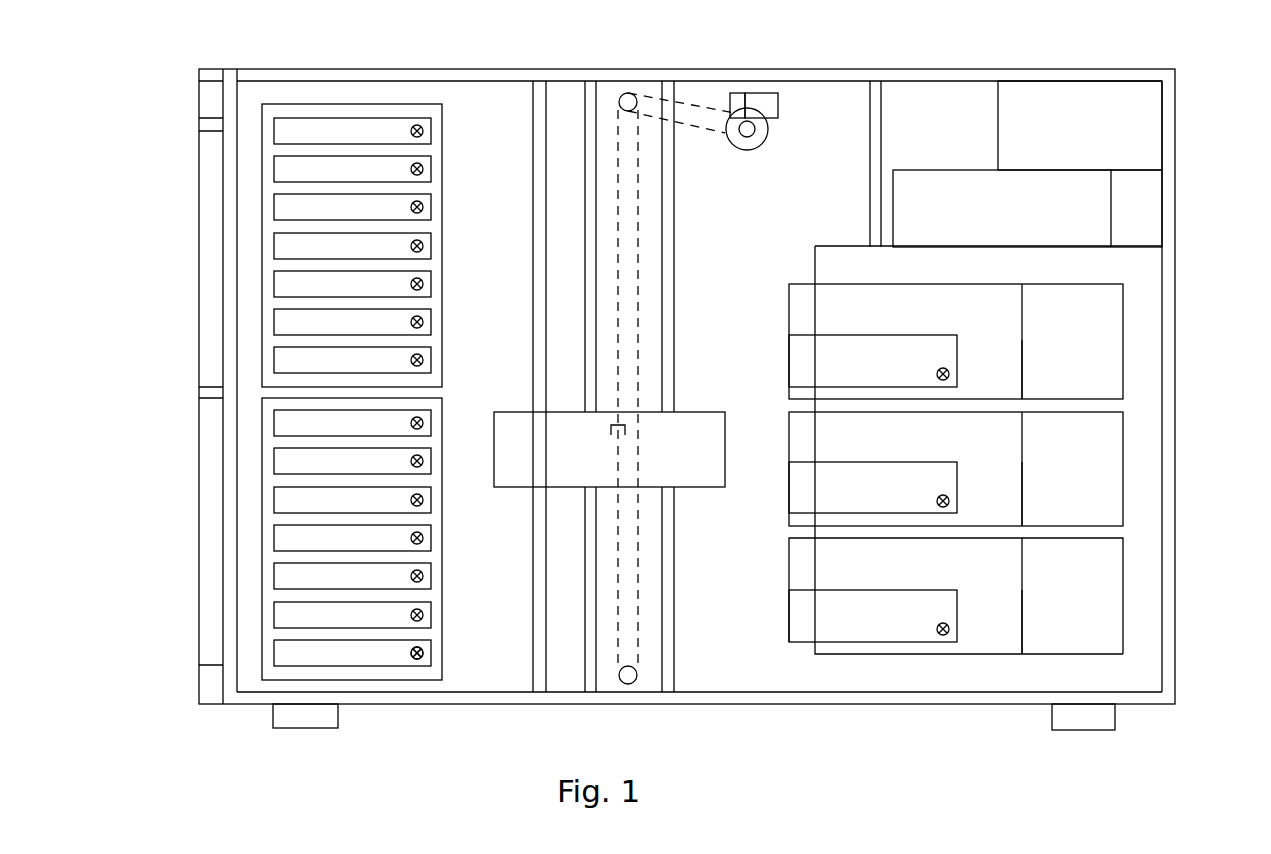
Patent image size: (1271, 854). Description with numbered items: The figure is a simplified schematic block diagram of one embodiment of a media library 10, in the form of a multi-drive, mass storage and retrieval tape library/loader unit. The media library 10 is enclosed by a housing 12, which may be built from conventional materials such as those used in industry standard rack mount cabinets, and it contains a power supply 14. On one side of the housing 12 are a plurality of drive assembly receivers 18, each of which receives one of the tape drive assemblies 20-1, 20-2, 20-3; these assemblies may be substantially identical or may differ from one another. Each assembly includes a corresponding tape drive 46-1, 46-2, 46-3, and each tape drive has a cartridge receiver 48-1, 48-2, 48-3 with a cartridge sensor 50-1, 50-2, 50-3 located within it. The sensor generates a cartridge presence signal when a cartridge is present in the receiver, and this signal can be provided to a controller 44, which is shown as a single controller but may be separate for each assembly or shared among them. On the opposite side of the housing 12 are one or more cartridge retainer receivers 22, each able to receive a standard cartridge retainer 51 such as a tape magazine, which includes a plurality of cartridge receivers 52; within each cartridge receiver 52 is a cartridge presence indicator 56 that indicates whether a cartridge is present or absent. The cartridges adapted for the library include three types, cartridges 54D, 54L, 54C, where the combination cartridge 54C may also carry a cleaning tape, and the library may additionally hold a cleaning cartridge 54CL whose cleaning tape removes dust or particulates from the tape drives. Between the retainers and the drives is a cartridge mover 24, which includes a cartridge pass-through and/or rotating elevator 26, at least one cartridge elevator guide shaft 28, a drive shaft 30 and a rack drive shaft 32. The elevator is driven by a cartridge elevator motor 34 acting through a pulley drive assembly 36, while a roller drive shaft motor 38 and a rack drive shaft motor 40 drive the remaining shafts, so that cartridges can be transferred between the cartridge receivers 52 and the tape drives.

The media library 10 is at (180, 458).
The housing 12 is at (883, 67).
The power supply 14 is at (1138, 155).
The drive assembly receivers 18 is at (1123, 323).
The tape drive assembly 20-1 is at (1104, 343).
The tape drive assembly 20-2 is at (1104, 469).
The tape drive assembly 20-3 is at (1104, 585).
The cartridge retainer receiver 22 is at (442, 675).
The cartridge mover 24 is at (650, 368).
The elevator 26 is at (703, 487).
The cartridge elevator guide shaft 28 is at (585, 278).
The drive shaft 30 is at (533, 238).
The rack drive shaft 32 is at (677, 292).
The cartridge elevator motor 34 is at (736, 148).
The pulley drive assembly 36 is at (620, 98).
The roller drive shaft motor 38 is at (770, 103).
The rack drive shaft motor 40 is at (732, 103).
The controller 44 is at (913, 229).
The tape drive 46-1 is at (1002, 350).
The tape drive 46-2 is at (1000, 473).
The tape drive 46-3 is at (998, 603).
The cartridge receiver 48-1 is at (842, 335).
The cartridge receiver 48-2 is at (842, 462).
The cartridge receiver 48-3 is at (846, 590).
The cartridge sensor 50-1 is at (950, 376).
The cartridge sensor 50-2 is at (950, 503).
The cartridge sensor 50-3 is at (950, 631).
The cartridge retainer 51 is at (435, 598).
The cartridge receiver 52 is at (423, 642).
The combination cartridge 54C is at (424, 500).
The cartridge 54L is at (430, 540).
The cartridge 54D is at (423, 572).
The cleaning cartridge 54CL is at (425, 353).
The cartridge presence indicator 56 is at (423, 653).